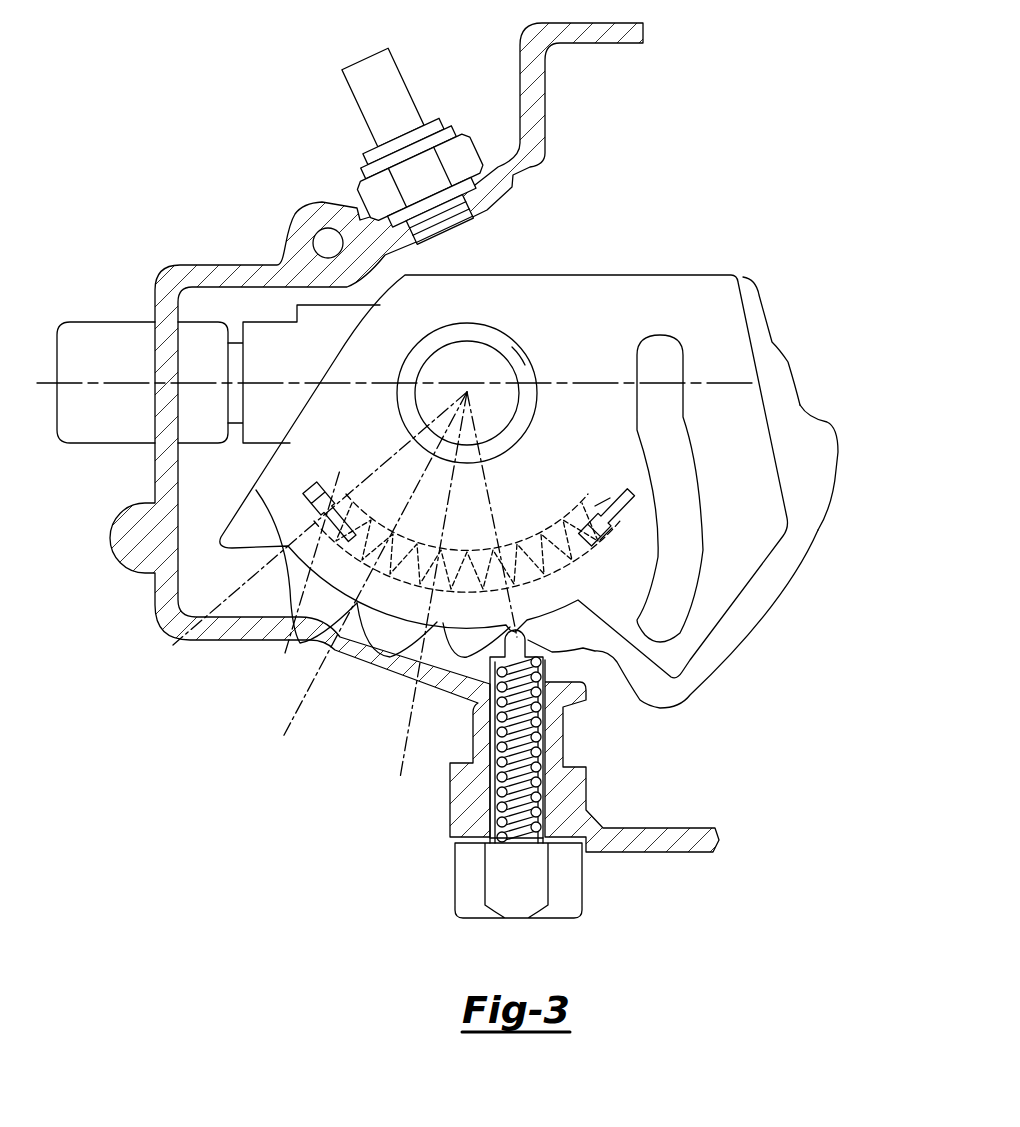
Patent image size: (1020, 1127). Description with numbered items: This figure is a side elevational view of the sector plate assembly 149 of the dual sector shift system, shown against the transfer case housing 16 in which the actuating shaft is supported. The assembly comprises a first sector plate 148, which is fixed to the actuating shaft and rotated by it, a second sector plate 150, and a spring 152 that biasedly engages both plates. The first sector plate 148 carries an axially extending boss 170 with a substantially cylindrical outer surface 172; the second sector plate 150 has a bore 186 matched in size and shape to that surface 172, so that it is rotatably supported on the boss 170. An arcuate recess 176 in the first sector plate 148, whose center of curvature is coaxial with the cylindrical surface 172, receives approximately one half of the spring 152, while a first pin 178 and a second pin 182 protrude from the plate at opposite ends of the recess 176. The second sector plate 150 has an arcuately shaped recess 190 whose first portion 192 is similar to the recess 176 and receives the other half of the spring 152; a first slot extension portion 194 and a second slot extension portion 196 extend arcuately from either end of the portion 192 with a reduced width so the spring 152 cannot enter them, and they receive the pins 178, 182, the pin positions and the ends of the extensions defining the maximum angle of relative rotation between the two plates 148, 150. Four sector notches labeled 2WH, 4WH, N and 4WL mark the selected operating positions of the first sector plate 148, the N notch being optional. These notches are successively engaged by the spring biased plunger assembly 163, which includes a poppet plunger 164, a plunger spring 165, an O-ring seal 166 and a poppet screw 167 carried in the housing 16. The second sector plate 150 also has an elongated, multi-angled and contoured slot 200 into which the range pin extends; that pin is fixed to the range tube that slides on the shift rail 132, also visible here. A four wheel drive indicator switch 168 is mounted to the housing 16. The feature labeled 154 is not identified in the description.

The transfer case housing 16 is at (200, 270).
The shift rail 132 is at (87, 380).
The first sector plate 148 is at (790, 360).
The sector plate assembly 149 is at (669, 247).
The second sector plate 150 is at (778, 455).
The spring 152 is at (547, 532).
The cam edge 154 is at (708, 698).
The spring biased plunger assembly 163 is at (510, 860).
The poppet plunger 164 is at (488, 652).
The plunger spring 165 is at (520, 768).
The O-ring seal 166 is at (488, 840).
The poppet screw 167 is at (467, 890).
The four wheel drive indicator switch 168 is at (353, 82).
The axially extending boss 170 is at (487, 330).
The cylindrically shaped outer surface 172 is at (528, 425).
The arcuate recess 176 is at (520, 542).
The first pin 178 is at (597, 508).
The second pin 182 is at (301, 577).
The bore 186 is at (514, 346).
The arcuately shaped recess 190 is at (512, 623).
The first portion 192 is at (602, 547).
The first slot extension portion 194 is at (606, 492).
The second slot extension portion 196 is at (333, 488).
The elongated, multi-angled and contoured slot 200 is at (700, 488).
The 2WH sector notch 2WH is at (531, 598).
The 4WH sector notch 4WH is at (418, 603).
The 4WL sector notch 4WL is at (301, 536).
The N sector notch N is at (367, 579).